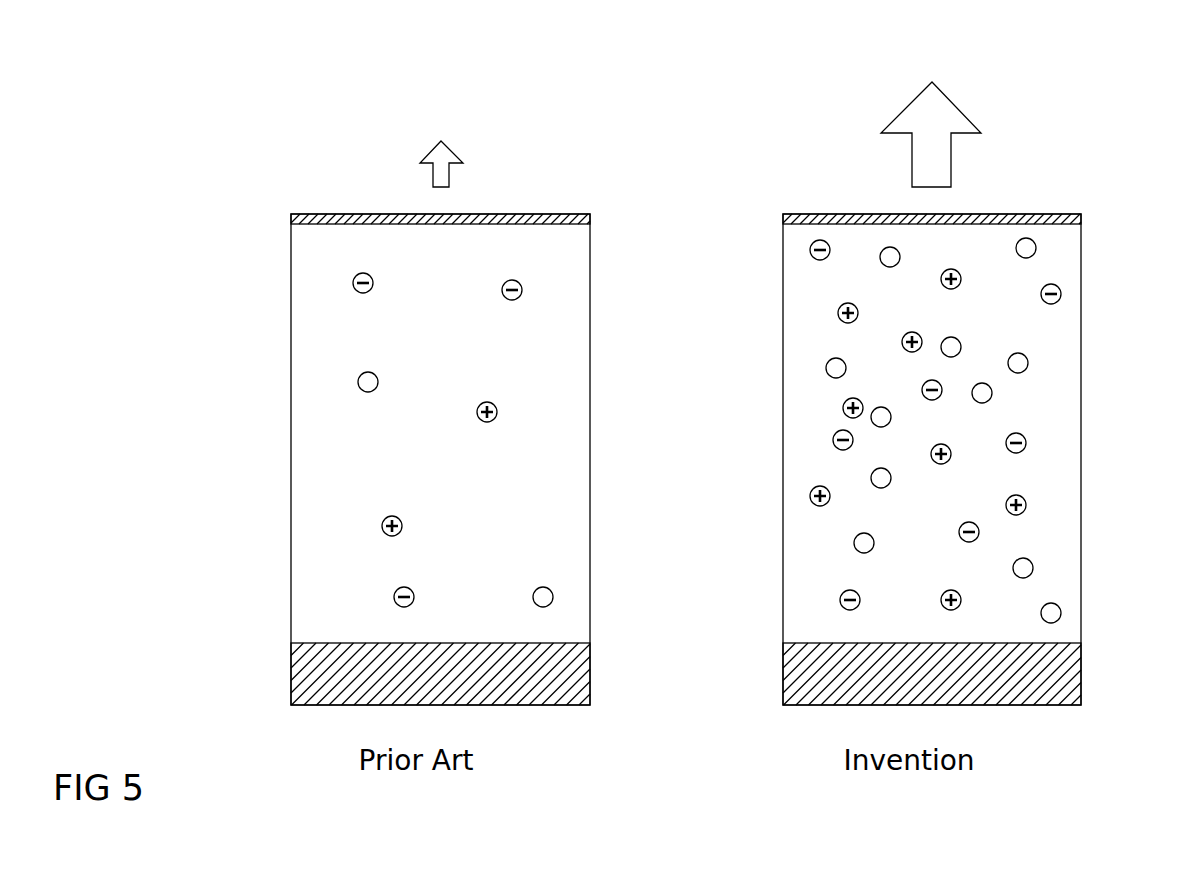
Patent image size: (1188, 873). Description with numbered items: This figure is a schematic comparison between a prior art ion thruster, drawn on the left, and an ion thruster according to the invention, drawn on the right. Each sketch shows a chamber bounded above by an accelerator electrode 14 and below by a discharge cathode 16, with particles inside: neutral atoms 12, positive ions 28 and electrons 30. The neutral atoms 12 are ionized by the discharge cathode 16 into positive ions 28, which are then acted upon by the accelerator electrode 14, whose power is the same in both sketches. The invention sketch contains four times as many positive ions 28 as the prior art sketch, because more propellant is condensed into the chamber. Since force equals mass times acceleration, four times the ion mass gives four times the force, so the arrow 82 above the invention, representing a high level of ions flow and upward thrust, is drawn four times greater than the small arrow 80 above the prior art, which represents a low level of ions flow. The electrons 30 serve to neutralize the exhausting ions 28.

The neutral atoms 12 is at (358, 382).
The accelerator electrode 14 is at (560, 217).
The discharge cathode 16 is at (573, 677).
The positive ions 28 is at (497, 412).
The electrons 30 is at (522, 290).
The arrow representing low level of ions flow 80 is at (440, 172).
The arrow representing high level of ions flow 82 is at (923, 163).